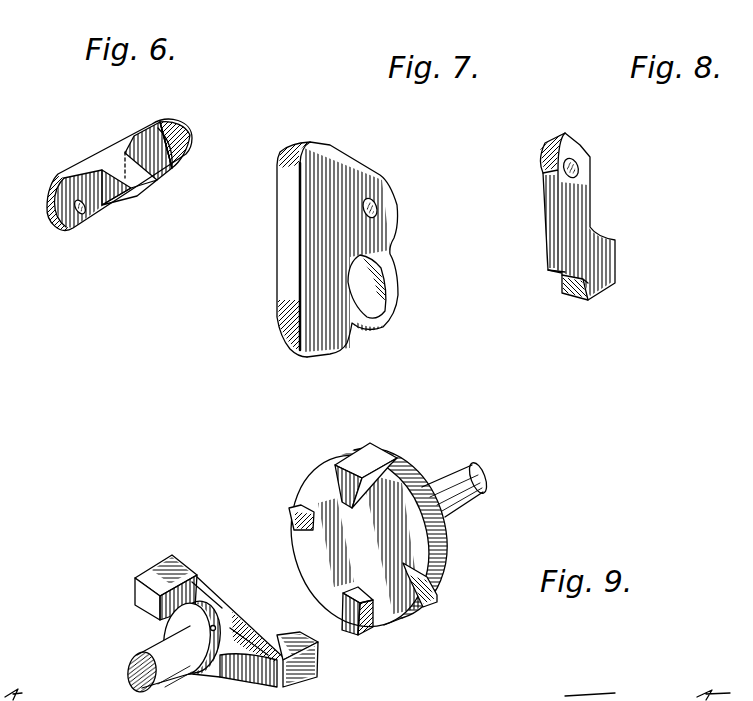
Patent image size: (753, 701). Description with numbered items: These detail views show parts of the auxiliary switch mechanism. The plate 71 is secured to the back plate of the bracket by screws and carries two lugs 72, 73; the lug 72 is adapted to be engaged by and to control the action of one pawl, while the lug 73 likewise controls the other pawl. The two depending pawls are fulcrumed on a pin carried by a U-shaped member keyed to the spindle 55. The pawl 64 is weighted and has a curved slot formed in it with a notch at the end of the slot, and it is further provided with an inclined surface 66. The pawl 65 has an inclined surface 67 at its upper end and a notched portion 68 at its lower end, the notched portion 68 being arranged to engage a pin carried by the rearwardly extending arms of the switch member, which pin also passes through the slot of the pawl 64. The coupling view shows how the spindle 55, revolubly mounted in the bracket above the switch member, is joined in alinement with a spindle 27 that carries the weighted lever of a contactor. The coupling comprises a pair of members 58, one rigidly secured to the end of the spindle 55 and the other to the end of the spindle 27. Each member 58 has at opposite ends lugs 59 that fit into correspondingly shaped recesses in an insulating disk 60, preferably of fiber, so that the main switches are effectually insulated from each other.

In FIG. 6, the plate 71 is at (85, 168).
In FIG. 6, the lug 72 is at (140, 198).
In FIG. 6, the lug 73 is at (173, 150).
In FIG. 7, the pawl 64 is at (348, 163).
In FIG. 7, the inclined surface 66 is at (393, 200).
In FIG. 8, the pawl 65 is at (591, 186).
In FIG. 8, the inclined surface 67 is at (571, 142).
In FIG. 8, the notched portion 68 is at (590, 297).
In FIG. 9, the insulating disk 60 is at (403, 618).
In FIG. 9, the spindle 55 is at (453, 466).
In FIG. 9, the lugs 59 is at (375, 455).
In FIG. 9, the coupling member 58 is at (256, 628).
In FIG. 9, the spindle 27 is at (152, 652).